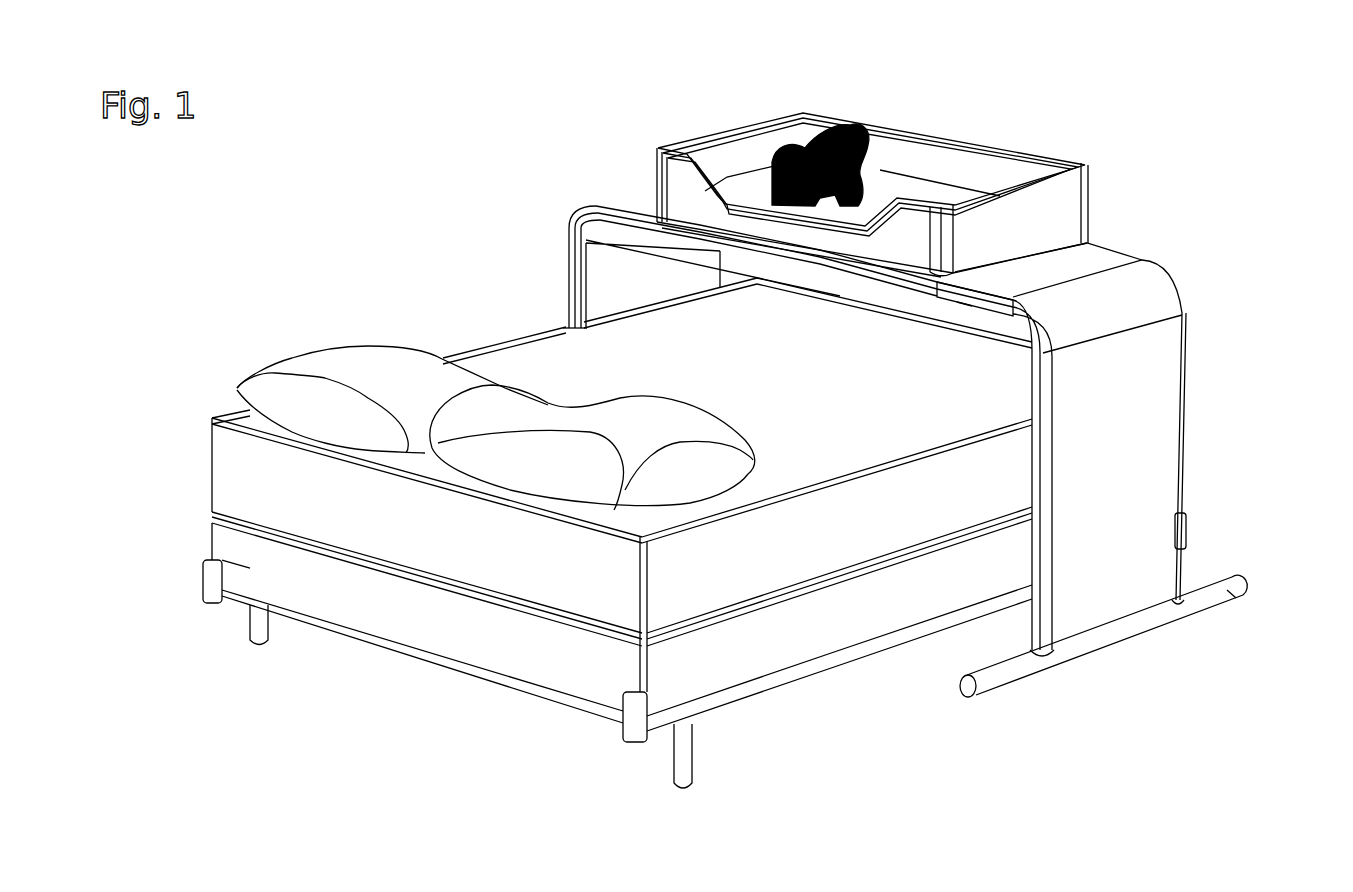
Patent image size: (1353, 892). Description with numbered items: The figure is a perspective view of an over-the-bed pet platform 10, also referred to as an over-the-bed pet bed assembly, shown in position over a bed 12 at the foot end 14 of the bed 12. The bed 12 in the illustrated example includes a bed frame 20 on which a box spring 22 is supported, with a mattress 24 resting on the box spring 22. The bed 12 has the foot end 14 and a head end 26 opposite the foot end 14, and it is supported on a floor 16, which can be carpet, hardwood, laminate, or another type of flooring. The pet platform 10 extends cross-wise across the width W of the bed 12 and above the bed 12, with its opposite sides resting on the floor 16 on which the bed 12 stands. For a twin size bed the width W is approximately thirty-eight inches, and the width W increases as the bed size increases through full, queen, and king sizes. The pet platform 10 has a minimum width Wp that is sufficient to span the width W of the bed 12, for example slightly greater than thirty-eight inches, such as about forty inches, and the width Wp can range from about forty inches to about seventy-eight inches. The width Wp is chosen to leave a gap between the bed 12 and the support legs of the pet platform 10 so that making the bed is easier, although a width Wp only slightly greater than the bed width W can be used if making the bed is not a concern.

The over-the-bed pet platform 10 is at (1152, 253).
The bed 12 is at (490, 333).
The foot end 14 is at (718, 305).
The floor 16 is at (1225, 633).
The bed frame 20 is at (797, 675).
The box spring 22 is at (335, 600).
The mattress 24 is at (225, 468).
The head end 26 is at (233, 388).
The width of the bed W is at (822, 470).
The minimum width of the pet platform Wp is at (1035, 455).